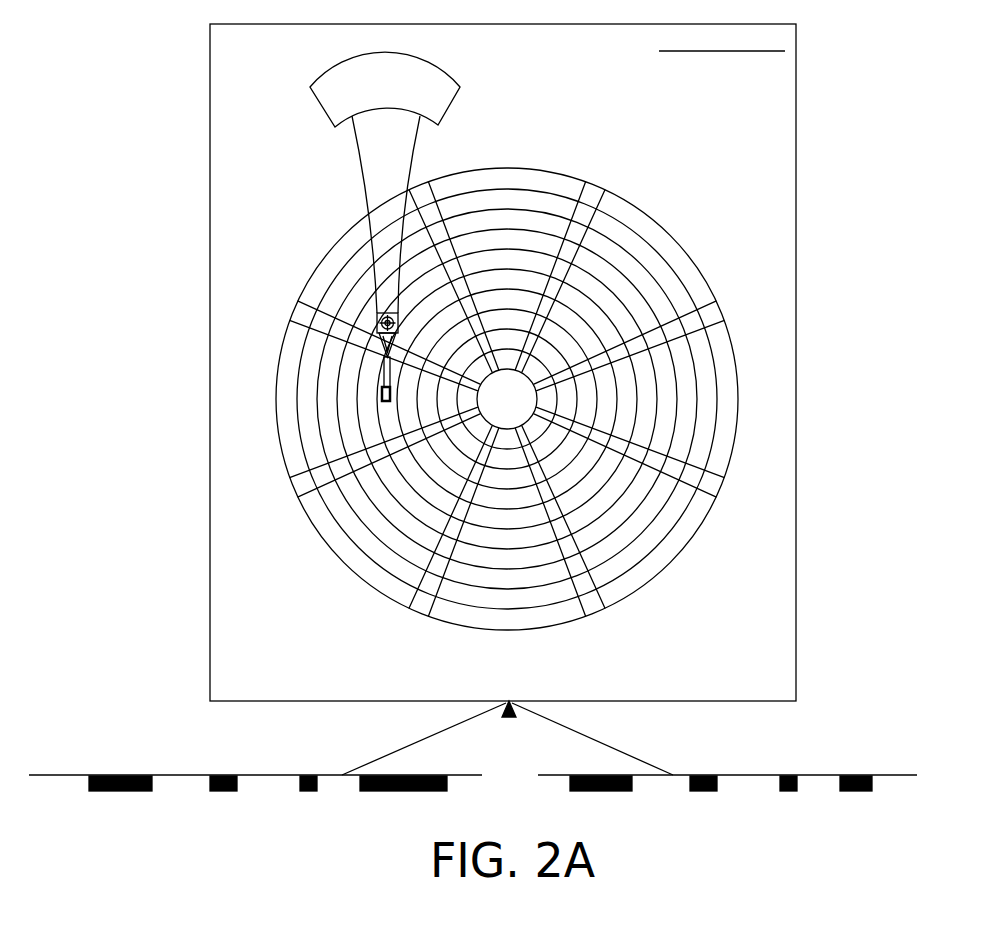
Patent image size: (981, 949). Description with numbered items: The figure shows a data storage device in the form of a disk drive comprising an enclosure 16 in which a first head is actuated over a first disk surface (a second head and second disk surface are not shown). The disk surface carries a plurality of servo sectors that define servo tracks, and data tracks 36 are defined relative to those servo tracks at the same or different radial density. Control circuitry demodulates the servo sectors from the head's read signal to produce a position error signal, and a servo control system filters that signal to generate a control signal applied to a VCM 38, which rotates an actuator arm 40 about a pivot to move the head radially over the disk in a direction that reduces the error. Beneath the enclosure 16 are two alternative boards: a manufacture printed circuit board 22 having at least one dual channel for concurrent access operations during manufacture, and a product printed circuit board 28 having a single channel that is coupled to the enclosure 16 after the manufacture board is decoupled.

The enclosure 16 is at (210, 209).
The data tracks 36 is at (498, 195).
The VCM 38 is at (332, 119).
The actuator arm 40 is at (370, 187).
The manufacture printed circuit board 22 is at (62, 770).
The product printed circuit board 28 is at (886, 770).